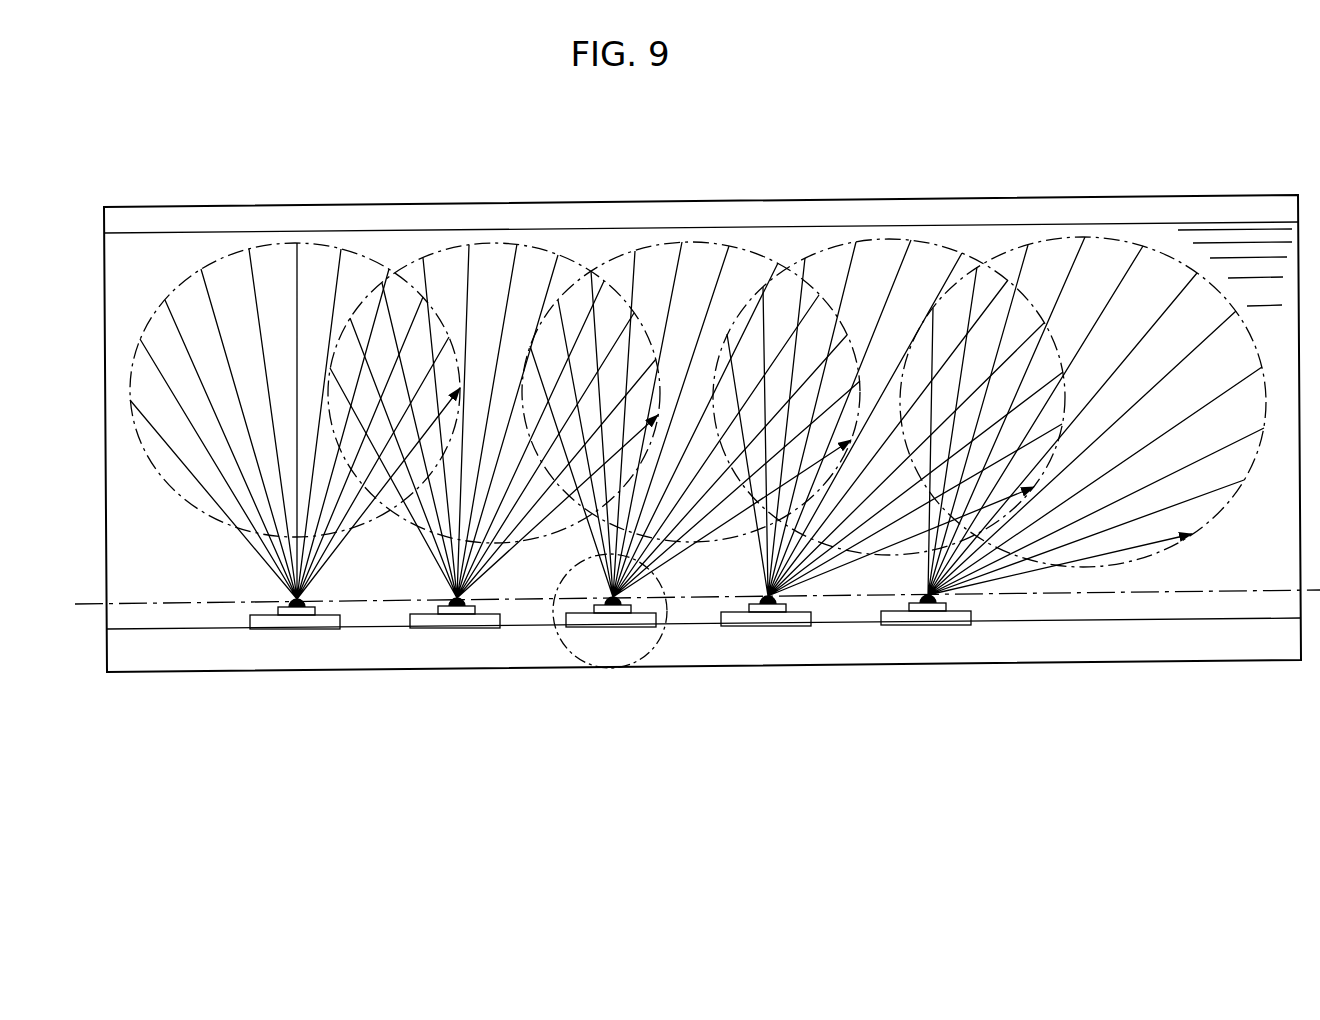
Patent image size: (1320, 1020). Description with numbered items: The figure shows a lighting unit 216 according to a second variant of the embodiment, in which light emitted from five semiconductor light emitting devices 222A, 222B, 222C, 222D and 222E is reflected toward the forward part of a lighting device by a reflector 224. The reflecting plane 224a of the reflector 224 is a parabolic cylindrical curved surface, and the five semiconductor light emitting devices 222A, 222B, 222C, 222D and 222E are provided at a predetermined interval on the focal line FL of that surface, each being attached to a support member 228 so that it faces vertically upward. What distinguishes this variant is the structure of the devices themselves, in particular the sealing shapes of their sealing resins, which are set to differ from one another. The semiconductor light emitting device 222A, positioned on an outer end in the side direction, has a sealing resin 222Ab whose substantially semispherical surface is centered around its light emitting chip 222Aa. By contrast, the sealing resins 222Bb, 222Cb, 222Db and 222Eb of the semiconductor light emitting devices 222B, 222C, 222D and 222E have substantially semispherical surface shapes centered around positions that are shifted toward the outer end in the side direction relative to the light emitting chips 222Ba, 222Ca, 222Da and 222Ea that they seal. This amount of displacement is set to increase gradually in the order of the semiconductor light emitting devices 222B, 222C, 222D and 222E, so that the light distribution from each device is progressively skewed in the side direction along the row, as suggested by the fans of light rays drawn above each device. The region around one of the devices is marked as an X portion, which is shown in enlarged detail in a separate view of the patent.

The lighting unit 216 is at (1046, 140).
The reflector 224 is at (840, 193).
The reflecting plane 224a is at (662, 254).
The support member 228 is at (1125, 645).
The focal line FL is at (1185, 599).
The X portion X is at (574, 668).
The semiconductor light emitting device 222A is at (307, 623).
The light emitting chip 222Aa is at (300, 608).
The sealing resin 222Ab is at (285, 597).
The semiconductor light emitting device 222B is at (467, 623).
The light emitting chip 222Ba is at (460, 607).
The sealing resin 222Bb is at (445, 596).
The semiconductor light emitting device 222C is at (627, 623).
The light emitting chip 222Ca is at (616, 606).
The sealing resin 222Cb is at (601, 595).
The semiconductor light emitting device 222D is at (781, 622).
The light emitting chip 222Da is at (771, 605).
The sealing resin 222Db is at (756, 594).
The semiconductor light emitting device 222E is at (940, 621).
The light emitting chip 222Ea is at (931, 604).
The sealing resin 222Eb is at (916, 593).